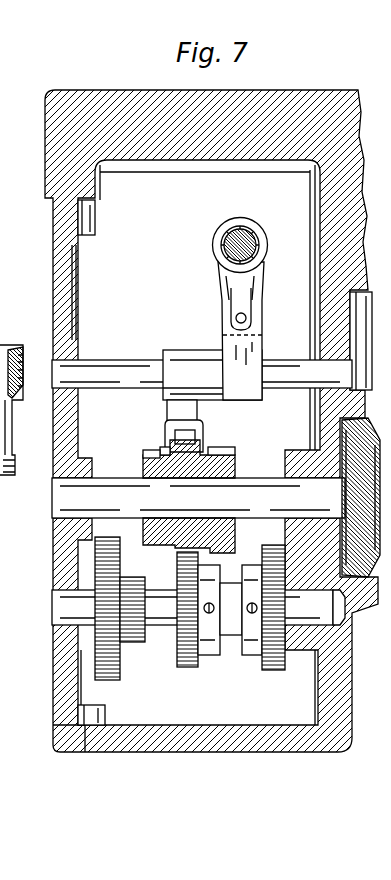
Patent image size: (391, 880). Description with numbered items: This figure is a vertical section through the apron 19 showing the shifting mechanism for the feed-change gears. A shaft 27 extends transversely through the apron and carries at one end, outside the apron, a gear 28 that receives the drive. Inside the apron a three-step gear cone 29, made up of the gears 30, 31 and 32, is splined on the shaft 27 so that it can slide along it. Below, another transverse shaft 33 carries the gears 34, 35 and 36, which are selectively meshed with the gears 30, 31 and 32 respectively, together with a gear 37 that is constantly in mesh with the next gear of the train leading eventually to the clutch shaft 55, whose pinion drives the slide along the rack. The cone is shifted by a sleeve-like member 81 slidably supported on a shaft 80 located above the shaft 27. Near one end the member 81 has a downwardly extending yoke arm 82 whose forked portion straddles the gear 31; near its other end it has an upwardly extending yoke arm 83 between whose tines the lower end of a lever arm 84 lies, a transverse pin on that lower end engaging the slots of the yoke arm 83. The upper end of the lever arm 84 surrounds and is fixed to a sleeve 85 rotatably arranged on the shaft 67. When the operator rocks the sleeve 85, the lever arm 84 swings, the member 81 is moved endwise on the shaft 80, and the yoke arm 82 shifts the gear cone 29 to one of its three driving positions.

The apron 19 is at (62, 532).
The shaft 27 is at (255, 487).
The gear 28 is at (345, 445).
The three-step gear cone 29 is at (165, 450).
The gear 30 is at (220, 450).
The gear 31 is at (205, 446).
The gear 32 is at (143, 454).
The shaft 33 is at (160, 598).
The gear 34 is at (273, 670).
The gear 35 is at (191, 665).
The gear 36 is at (108, 680).
The gear 37 is at (133, 642).
The shaft 55 is at (12, 345).
The shaft 67 is at (226, 236).
The shaft 80 is at (110, 365).
The sleeve-like member 81 is at (200, 350).
The yoke arm 82 is at (183, 410).
The yoke arm 83 is at (262, 325).
The lever arm 84 is at (228, 282).
The sleeve 85 is at (245, 230).